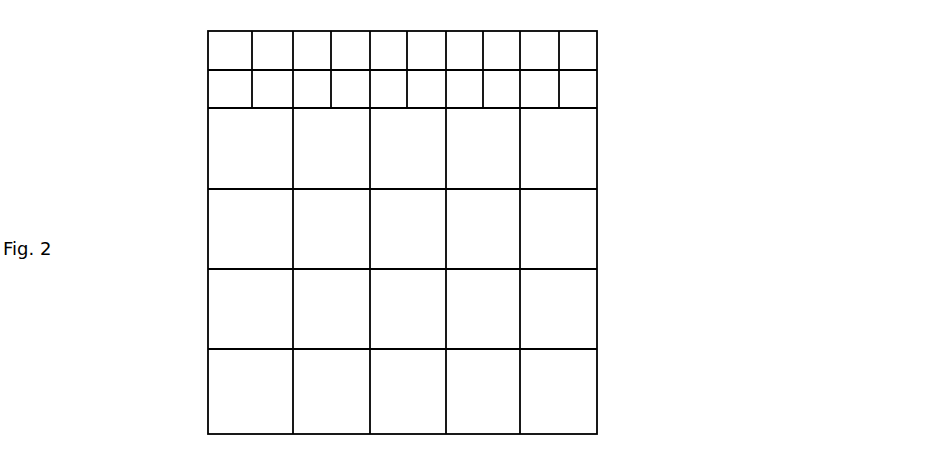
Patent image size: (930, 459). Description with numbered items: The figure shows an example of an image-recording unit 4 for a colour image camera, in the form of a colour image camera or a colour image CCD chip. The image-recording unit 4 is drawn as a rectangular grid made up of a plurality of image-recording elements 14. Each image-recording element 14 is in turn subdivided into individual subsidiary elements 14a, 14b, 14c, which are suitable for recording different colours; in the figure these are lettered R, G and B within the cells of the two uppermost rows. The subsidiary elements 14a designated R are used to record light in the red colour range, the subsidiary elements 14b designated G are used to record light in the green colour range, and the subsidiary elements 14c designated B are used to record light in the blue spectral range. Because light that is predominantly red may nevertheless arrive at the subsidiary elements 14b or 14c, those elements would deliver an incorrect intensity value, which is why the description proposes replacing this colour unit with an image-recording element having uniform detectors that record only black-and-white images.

The image-recording unit 4 is at (613, 209).
The image-recording element 14 is at (257, 155).
The subsidiary element 14a is at (226, 38).
The subsidiary element 14b is at (228, 97).
The subsidiary element 14c is at (565, 91).